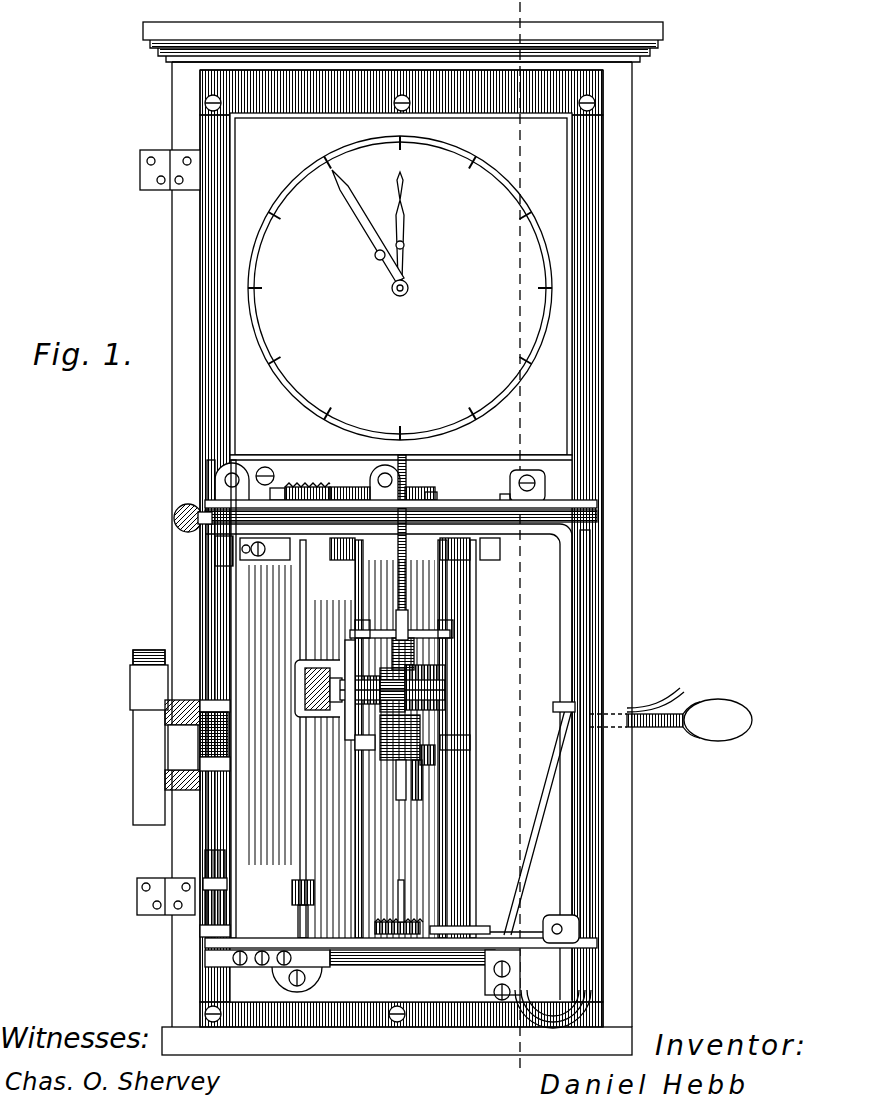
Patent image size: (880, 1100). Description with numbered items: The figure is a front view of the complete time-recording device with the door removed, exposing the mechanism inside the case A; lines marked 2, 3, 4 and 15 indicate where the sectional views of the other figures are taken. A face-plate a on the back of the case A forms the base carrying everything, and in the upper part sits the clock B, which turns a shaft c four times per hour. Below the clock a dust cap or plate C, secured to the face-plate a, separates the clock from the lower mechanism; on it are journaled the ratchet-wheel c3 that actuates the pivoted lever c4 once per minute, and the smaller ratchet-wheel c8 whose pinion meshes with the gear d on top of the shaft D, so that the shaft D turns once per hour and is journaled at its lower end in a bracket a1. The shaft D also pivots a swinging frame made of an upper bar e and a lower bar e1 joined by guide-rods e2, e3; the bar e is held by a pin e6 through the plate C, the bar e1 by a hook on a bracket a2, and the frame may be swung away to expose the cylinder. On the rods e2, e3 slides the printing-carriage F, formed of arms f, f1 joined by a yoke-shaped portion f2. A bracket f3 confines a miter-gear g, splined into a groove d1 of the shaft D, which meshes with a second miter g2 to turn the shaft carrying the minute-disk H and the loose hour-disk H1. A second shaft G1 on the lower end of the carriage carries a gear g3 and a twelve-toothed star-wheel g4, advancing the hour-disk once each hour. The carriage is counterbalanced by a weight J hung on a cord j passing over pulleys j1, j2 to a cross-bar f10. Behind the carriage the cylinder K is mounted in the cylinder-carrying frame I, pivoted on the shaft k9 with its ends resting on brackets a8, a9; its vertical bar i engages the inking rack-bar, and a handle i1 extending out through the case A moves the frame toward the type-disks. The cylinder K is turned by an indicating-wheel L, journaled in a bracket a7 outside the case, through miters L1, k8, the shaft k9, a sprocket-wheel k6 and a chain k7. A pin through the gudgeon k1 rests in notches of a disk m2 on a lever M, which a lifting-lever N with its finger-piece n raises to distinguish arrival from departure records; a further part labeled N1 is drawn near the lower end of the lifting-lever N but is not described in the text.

The inclosing frame or case A is at (605, 818).
The face-plate a is at (604, 268).
The clock B is at (400, 288).
The section line 2 2 is at (506, 20).
The section line 3 3 is at (610, 462).
The section line 4 4 is at (600, 518).
The section line 15 15 is at (200, 918).
The pulley j1 is at (232, 474).
The cord j is at (262, 472).
The pin e6 is at (505, 494).
The gear d is at (280, 488).
The smaller ratchet-wheel c8 is at (310, 487).
The ratchet-wheel c3 is at (345, 487).
The shaft c is at (420, 487).
The lever c4 is at (437, 496).
The pulley j2 is at (380, 458).
The dust cap or plate C is at (597, 505).
The upper horizontal bar e is at (565, 528).
The chain k7 is at (330, 498).
The second sprocket-wheel k6 is at (174, 518).
The bracket a8 is at (215, 548).
The shaft D is at (300, 576).
The shaft k9 is at (209, 634).
The guide-rod e2 is at (355, 828).
The guide-rod e3 is at (436, 840).
The groove d1 is at (365, 857).
The vertically-extending bar i is at (370, 878).
The miter-gear g is at (296, 676).
The bracket f3 is at (300, 690).
The arm f1 is at (350, 672).
The arm f is at (428, 657).
The printing-carriage F is at (442, 672).
The yoke-shaped portion f2 is at (445, 690).
The minute printing-disk H is at (425, 640).
The hour printing-disk H1 is at (350, 642).
The cross-bar f10 is at (404, 612).
The star-wheel g4 is at (442, 718).
The second miter-gear g2 is at (335, 722).
The gear g3 is at (420, 758).
The second shaft G1 is at (398, 780).
The cylinder K is at (404, 786).
The indicating-wheel L is at (160, 760).
The miter L1 is at (160, 790).
The miter k8 is at (165, 720).
The bracket a7 is at (175, 785).
The weight J is at (205, 856).
The cylinder-carrying frame I is at (205, 880).
The bracket a9 is at (205, 958).
The bracket a1 is at (312, 1003).
The lower horizontal bar e1 is at (425, 948).
The bracket a2 is at (490, 1003).
The disk m2 is at (398, 936).
The lever M is at (426, 948).
The gudgeon k1 is at (400, 922).
The lifting-lever N is at (562, 778).
The bracket N1 is at (525, 926).
The handle i1 is at (677, 720).
The finger-piece n is at (658, 691).